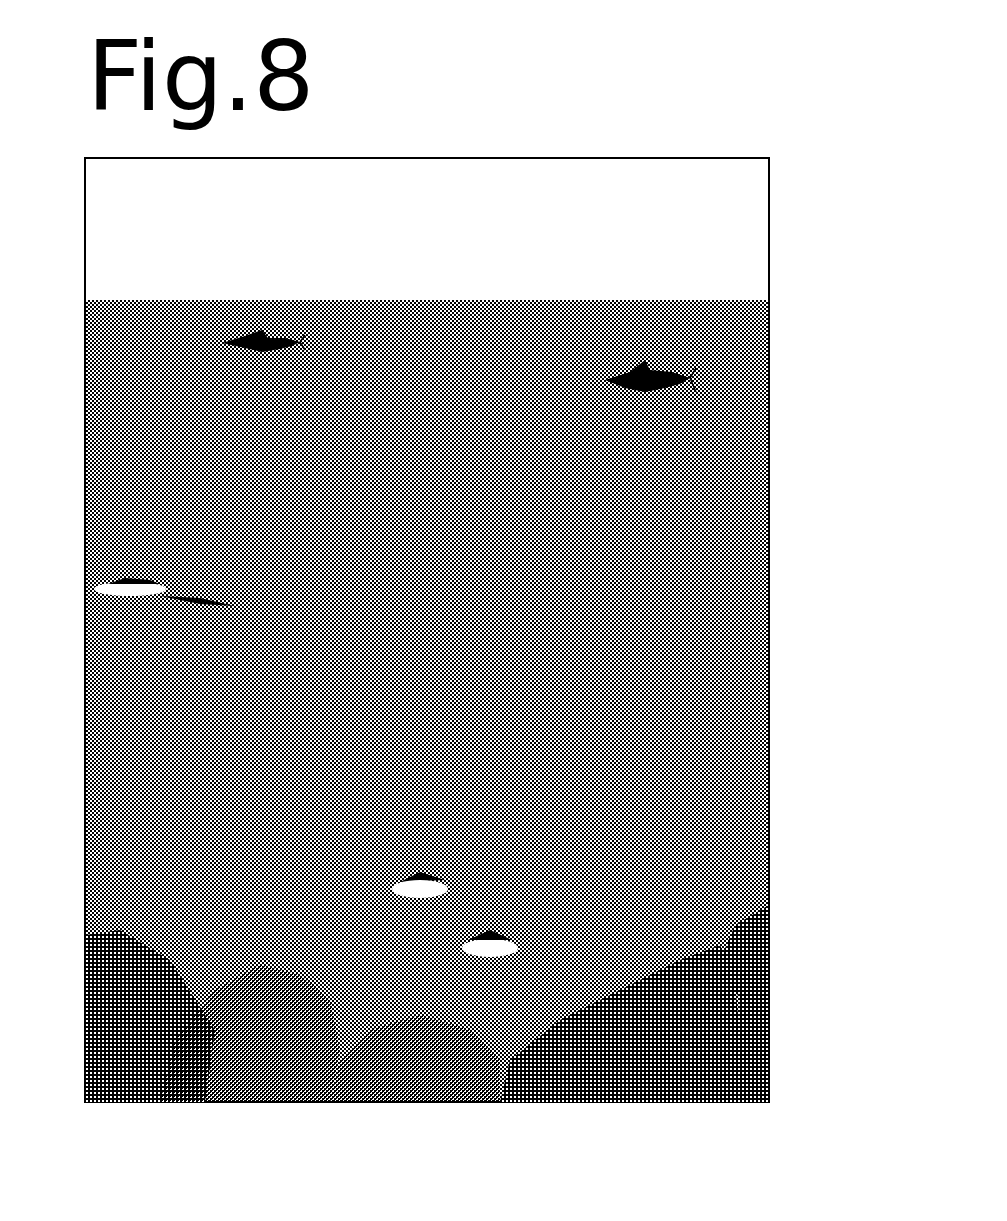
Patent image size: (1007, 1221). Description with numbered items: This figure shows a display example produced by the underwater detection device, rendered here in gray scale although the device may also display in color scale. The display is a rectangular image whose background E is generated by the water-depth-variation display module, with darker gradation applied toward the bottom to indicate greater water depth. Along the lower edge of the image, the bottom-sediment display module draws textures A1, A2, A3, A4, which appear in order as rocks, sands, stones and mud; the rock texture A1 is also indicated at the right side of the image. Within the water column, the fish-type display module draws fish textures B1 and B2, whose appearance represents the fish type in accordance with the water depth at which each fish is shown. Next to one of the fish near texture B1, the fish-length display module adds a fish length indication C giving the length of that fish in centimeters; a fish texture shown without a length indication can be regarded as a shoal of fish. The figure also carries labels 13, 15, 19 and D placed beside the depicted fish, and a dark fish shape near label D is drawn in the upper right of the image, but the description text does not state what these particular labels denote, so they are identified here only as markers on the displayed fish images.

The fish (fish-finding target, upper left) 13 is at (290, 345).
The fish (detected fish echo) 15 is at (166, 589).
The fish (detected fish echo) 19 is at (450, 889).
The fish-type texture B1 is at (160, 561).
The fish-type texture B2 is at (455, 856).
The fish length indication C is at (238, 606).
The fish school D is at (598, 400).
The background E is at (757, 597).
The bottom-sediment texture (rocks) A1 is at (767, 901).
The bottom-sediment texture (sands) A2 is at (257, 1082).
The bottom-sediment texture (stones) A3 is at (433, 1082).
The bottom-sediment texture (mud) A4 is at (675, 1082).